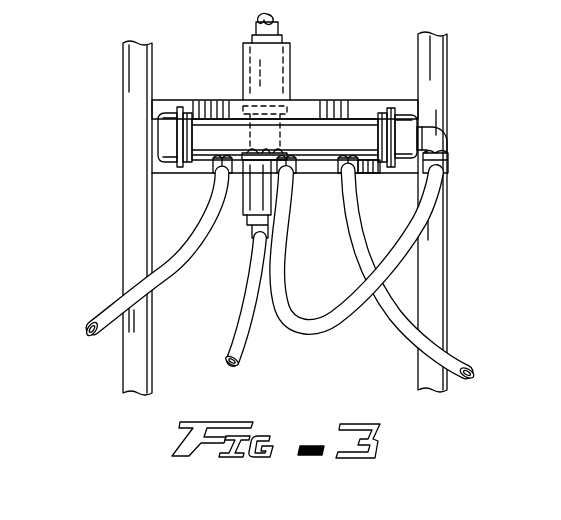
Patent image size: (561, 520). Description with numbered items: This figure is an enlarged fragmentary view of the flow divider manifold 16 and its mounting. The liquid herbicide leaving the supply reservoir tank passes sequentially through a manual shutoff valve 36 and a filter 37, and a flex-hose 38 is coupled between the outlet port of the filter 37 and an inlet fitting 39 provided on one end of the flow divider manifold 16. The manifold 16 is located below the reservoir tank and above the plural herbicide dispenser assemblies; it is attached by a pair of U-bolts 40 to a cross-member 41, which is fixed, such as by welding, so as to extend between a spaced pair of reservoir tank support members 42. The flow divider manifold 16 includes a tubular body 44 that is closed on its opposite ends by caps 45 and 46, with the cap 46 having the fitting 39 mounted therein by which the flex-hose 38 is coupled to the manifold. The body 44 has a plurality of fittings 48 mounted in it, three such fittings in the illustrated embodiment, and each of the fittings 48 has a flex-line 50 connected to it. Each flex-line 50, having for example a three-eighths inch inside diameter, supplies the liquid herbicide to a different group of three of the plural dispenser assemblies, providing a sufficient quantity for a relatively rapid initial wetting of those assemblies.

The flow divider manifold 16 is at (328, 101).
The manual shutoff valve 36 is at (290, 56).
The filter 37 is at (246, 222).
The flex-hose 38 is at (303, 327).
The inlet fitting 39 is at (447, 134).
The U-bolts 40 is at (181, 106).
The cross-member 41 is at (212, 100).
The reservoir tank support members 42 is at (132, 62).
The tubular body 44 is at (304, 128).
The cap 45 is at (168, 125).
The cap 46 is at (420, 124).
The fittings 48 is at (210, 172).
The flex-line 50 is at (112, 306).